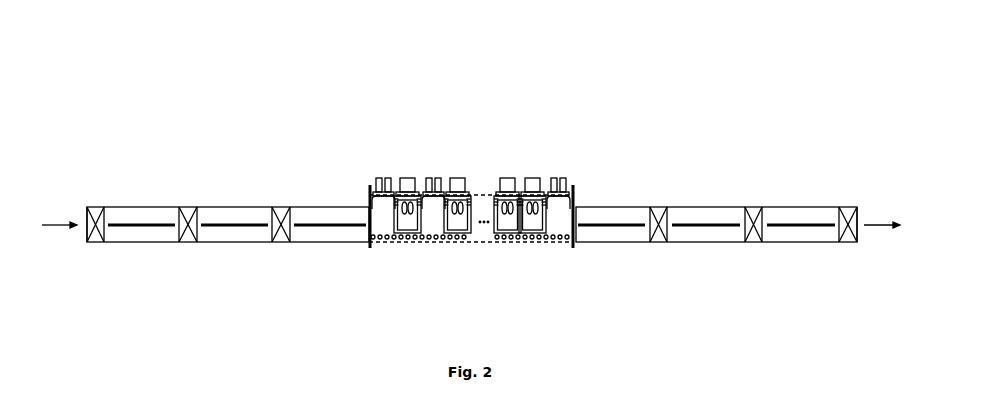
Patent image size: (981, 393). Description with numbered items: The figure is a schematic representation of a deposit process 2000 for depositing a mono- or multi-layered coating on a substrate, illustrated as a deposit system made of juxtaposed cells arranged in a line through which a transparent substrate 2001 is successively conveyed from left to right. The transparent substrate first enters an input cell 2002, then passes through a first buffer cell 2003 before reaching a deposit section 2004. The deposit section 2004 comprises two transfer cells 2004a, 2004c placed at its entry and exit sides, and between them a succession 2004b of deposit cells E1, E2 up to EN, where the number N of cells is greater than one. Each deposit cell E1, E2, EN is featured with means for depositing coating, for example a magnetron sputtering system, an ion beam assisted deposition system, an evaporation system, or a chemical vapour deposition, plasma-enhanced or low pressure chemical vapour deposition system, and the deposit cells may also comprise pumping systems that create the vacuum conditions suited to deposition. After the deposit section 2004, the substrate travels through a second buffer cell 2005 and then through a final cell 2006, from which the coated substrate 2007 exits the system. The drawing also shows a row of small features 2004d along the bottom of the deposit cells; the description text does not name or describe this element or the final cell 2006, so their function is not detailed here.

The deposit process 2000 is at (262, 85).
The transparent substrate 2001 is at (59, 213).
The input cell 2002 is at (187, 202).
The first buffer cell 2003 is at (192, 202).
The deposit section 2004 is at (668, 148).
The transfer cell 2004a is at (282, 202).
The succession of deposit cells 2004b is at (408, 222).
The transfer cell 2004c is at (662, 202).
The nozzle holes 2004d is at (568, 237).
The second buffer cell 2005 is at (753, 202).
The sixth tube segment 2006 is at (842, 202).
The coated substrate 2007 is at (882, 213).
The deposit cell E1 is at (383, 244).
The deposit cell E2 is at (433, 244).
The deposit cell EN is at (560, 244).